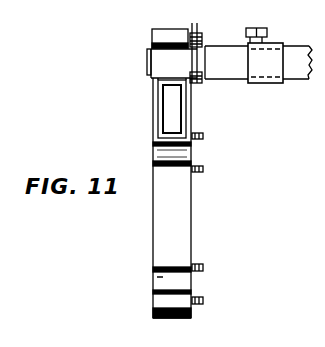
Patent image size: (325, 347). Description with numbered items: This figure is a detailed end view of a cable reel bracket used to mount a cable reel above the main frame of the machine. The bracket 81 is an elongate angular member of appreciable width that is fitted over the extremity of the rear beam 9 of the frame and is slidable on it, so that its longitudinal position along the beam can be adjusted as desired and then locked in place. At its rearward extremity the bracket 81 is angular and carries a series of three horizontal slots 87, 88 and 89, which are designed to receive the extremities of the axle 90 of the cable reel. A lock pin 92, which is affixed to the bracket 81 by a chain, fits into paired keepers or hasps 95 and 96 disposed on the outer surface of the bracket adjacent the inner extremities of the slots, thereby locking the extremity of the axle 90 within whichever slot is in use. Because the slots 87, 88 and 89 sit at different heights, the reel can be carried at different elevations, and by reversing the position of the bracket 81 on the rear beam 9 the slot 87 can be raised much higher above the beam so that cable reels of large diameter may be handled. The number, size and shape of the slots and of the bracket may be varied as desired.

The rear beam 9 is at (183, 110).
The bracket member 81 is at (182, 202).
The horizontal slot 87 is at (167, 283).
The horizontal slot 88 is at (165, 154).
The horizontal slot 89 is at (160, 75).
The axle 90 is at (160, 60).
The lock pin 92 is at (197, 32).
The keeper 95 is at (203, 168).
The keeper 96 is at (203, 300).